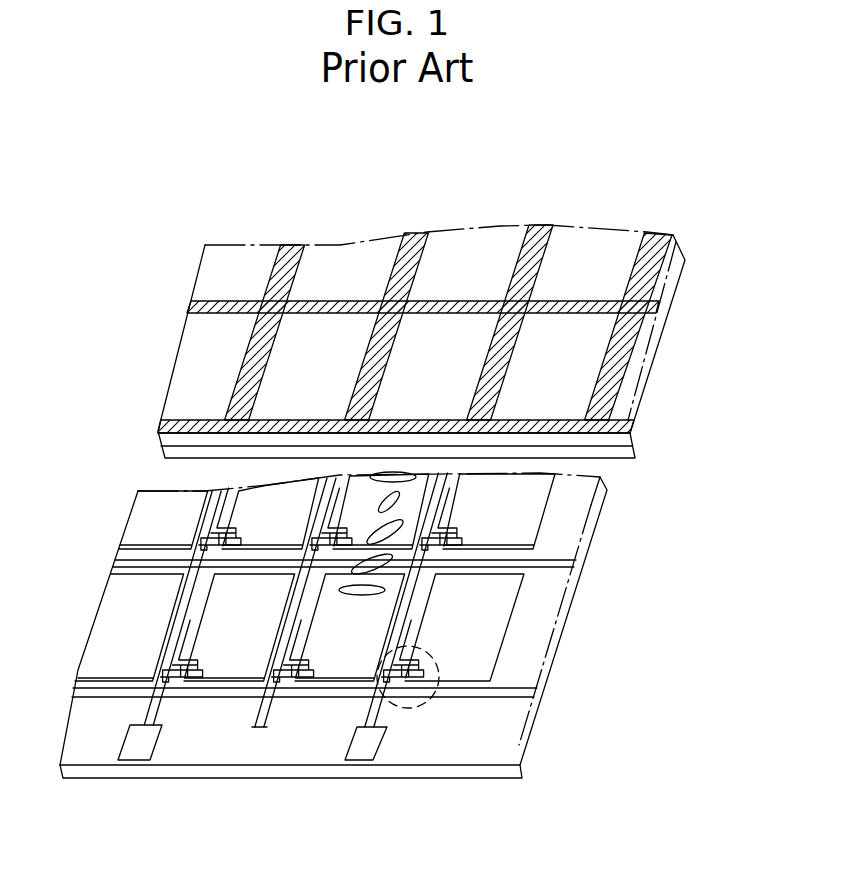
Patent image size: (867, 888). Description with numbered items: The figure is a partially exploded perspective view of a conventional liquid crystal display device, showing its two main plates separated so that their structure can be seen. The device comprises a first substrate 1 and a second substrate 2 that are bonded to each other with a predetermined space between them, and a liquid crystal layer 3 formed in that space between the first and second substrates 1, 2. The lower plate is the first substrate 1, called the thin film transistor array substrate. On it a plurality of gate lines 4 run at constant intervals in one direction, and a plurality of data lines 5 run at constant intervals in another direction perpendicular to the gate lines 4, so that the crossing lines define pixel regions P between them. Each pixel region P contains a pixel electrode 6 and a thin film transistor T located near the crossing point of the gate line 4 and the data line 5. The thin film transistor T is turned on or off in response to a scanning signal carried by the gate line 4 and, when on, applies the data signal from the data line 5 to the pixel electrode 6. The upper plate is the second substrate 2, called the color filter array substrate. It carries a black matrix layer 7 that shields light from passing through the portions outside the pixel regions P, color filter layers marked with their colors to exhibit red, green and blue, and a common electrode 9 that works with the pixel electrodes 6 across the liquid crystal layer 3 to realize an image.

The first substrate 1 is at (486, 772).
The second substrate 2 is at (618, 440).
The liquid crystal layer 3 is at (388, 526).
The gate line 4 is at (497, 693).
The data line 5 is at (373, 713).
The pixel electrode 6 is at (503, 637).
The black matrix layer 7 is at (657, 307).
The common electrode 9 is at (620, 452).
The pixel region P is at (540, 597).
The thin film transistor T is at (410, 710).